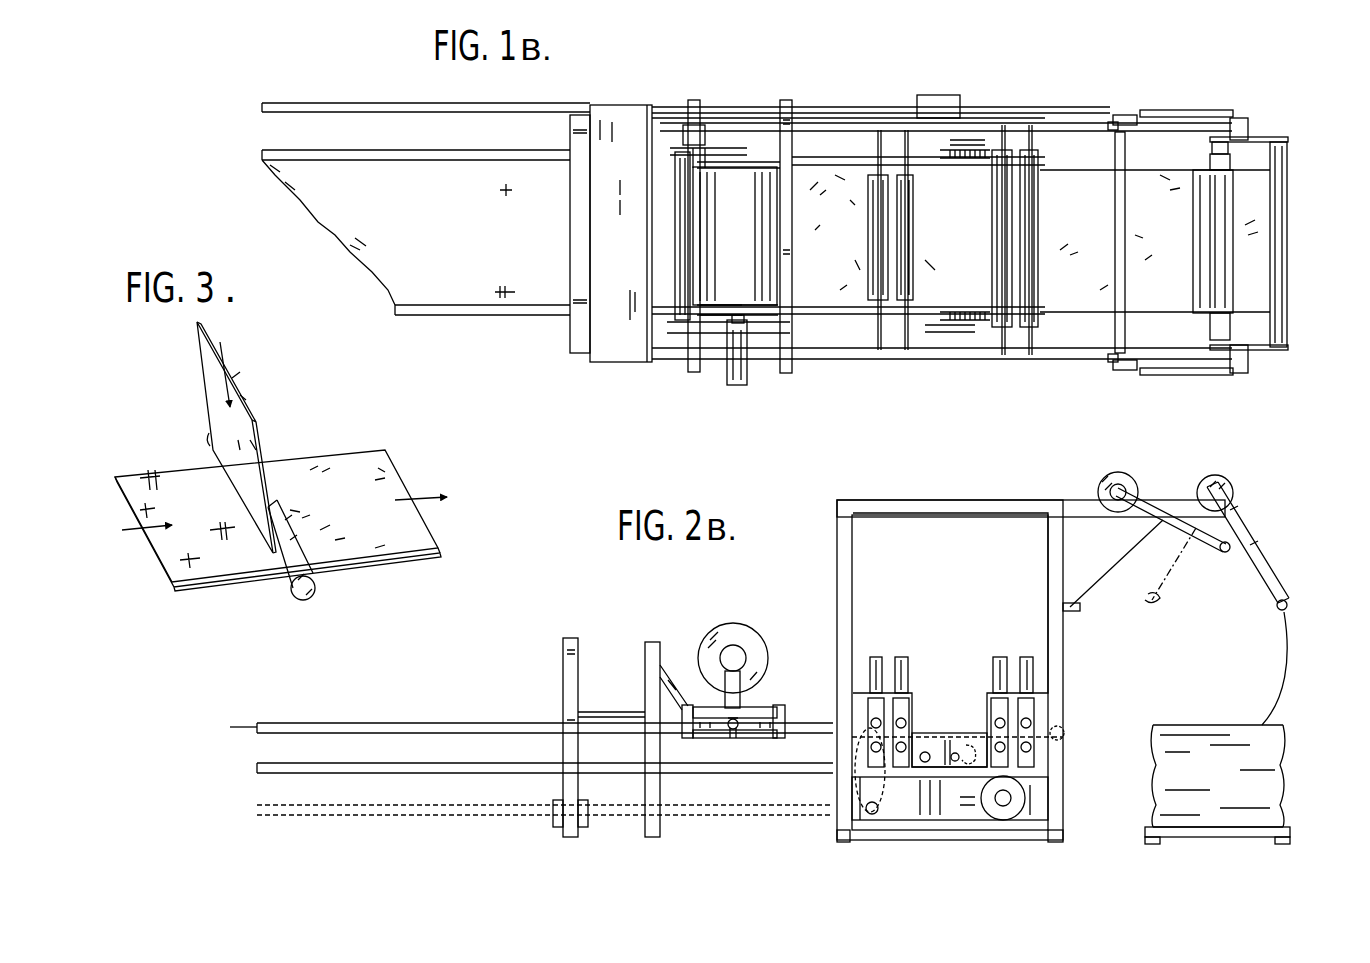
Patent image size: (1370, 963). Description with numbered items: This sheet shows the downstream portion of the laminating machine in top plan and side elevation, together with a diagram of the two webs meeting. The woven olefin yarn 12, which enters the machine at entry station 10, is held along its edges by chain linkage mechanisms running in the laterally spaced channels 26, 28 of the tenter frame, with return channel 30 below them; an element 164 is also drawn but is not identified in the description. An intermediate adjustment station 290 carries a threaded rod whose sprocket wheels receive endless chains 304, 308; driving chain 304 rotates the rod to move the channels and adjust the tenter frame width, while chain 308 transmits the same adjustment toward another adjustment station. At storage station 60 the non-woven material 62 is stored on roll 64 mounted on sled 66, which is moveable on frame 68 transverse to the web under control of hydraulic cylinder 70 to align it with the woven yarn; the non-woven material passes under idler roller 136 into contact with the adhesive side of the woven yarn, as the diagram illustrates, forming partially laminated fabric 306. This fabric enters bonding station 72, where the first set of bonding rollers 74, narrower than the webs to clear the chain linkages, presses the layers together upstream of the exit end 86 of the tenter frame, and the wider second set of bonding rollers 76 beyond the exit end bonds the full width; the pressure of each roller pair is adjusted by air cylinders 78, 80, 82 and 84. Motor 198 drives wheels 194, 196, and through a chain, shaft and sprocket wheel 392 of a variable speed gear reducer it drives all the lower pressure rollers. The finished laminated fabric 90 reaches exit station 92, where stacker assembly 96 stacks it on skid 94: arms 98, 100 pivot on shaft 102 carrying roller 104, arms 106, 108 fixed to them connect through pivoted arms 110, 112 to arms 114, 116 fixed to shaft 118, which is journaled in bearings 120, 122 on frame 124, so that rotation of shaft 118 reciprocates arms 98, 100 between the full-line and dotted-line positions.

In FIG. 1B, the entry station 10 is at (497, 338).
In FIG. 2B, the entry station 10 is at (522, 632).
In FIG. 1B, the woven olefin yarn 12 is at (386, 277).
In FIG. 2B, the woven olefin yarn 12 is at (240, 724).
In FIG. 3, the woven olefin yarn 12 is at (228, 570).
In FIG. 1B, the channel 26 is at (422, 318).
In FIG. 2B, the channel 26 is at (352, 723).
In FIG. 1B, the channel 28 is at (442, 152).
In FIG. 2B, the return channel 30 is at (335, 768).
In FIG. 1B, the storage station 60 is at (748, 100).
In FIG. 2B, the storage station 60 is at (700, 614).
In FIG. 2B, the non-woven material 62 is at (705, 705).
In FIG. 3, the non-woven material 62 is at (206, 380).
In FIG. 1B, the roll 64 is at (750, 236).
In FIG. 2B, the roll 64 is at (742, 624).
In FIG. 1B, the sled 66 is at (790, 106).
In FIG. 2B, the sled 66 is at (780, 706).
In FIG. 2B, the frame 68 is at (718, 748).
In FIG. 1B, the hydraulic cylinder 70 is at (735, 367).
In FIG. 2B, the hydraulic cylinder 70 is at (740, 718).
In FIG. 2B, the bonding station 72 is at (949, 632).
In FIG. 1B, the first set of bonding rollers 74 is at (888, 256).
In FIG. 1B, the second set of bonding rollers 76 is at (1025, 216).
In FIG. 2B, the air cylinder 78 is at (877, 656).
In FIG. 2B, the air cylinder 80 is at (903, 656).
In FIG. 2B, the air cylinder 82 is at (1003, 656).
In FIG. 2B, the air cylinder 84 is at (1027, 656).
In FIG. 2B, the exit end 86 is at (943, 731).
In FIG. 1B, the laminated fabric 90 is at (1098, 244).
In FIG. 2B, the laminated fabric 90 is at (1098, 585).
In FIG. 1B, the exit station 92 is at (1338, 262).
In FIG. 2B, the exit station 92 is at (1292, 542).
In FIG. 2B, the skid 94 is at (1232, 837).
In FIG. 1B, the stacker assembly 96 is at (1296, 215).
In FIG. 2B, the stacker assembly 96 is at (1252, 578).
In FIG. 2B, the arm 98 is at (1276, 606).
In FIG. 1B, the arm 100 is at (1284, 137).
In FIG. 1B, the shaft 102 is at (1212, 146).
In FIG. 1B, the roller 104 is at (1212, 325).
In FIG. 2B, the roller 104 is at (1228, 493).
In FIG. 1B, the arm 106 is at (1248, 370).
In FIG. 2B, the arm 106 is at (1226, 552).
In FIG. 1B, the arm 108 is at (1246, 118).
In FIG. 1B, the arm 110 is at (1183, 375).
In FIG. 2B, the arm 110 is at (1182, 538).
In FIG. 1B, the arm 112 is at (1192, 110).
In FIG. 1B, the arm 114 is at (1130, 370).
In FIG. 2B, the arm 114 is at (1127, 493).
In FIG. 1B, the arm 116 is at (1125, 114).
In FIG. 1B, the shaft 118 is at (1126, 210).
In FIG. 1B, the bearing 120 is at (1108, 362).
In FIG. 1B, the bearing 122 is at (1110, 122).
In FIG. 1B, the frame 124 is at (1062, 360).
In FIG. 2B, the frame 124 is at (1040, 505).
In FIG. 3, the idler roller 136 is at (316, 594).
In FIG. 1B, the top rail 164 is at (360, 95).
In FIG. 1B, the wheel 194 is at (983, 320).
In FIG. 2B, the wheel 194 is at (972, 744).
In FIG. 1B, the wheel 196 is at (988, 165).
In FIG. 2B, the motor 198 is at (1008, 820).
In FIG. 2B, the intermediate adjustment station 290 is at (558, 773).
In FIG. 2B, the endless chain 304 is at (755, 822).
In FIG. 1B, the partially laminated fabric 306 is at (846, 256).
In FIG. 3, the partially laminated fabric 306 is at (367, 462).
In FIG. 2B, the endless chain 308 is at (425, 817).
In FIG. 2B, the sprocket wheel 392 is at (872, 815).